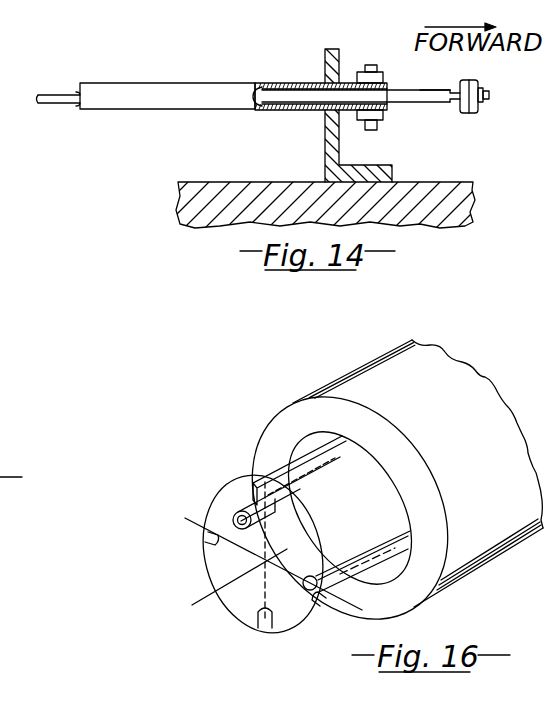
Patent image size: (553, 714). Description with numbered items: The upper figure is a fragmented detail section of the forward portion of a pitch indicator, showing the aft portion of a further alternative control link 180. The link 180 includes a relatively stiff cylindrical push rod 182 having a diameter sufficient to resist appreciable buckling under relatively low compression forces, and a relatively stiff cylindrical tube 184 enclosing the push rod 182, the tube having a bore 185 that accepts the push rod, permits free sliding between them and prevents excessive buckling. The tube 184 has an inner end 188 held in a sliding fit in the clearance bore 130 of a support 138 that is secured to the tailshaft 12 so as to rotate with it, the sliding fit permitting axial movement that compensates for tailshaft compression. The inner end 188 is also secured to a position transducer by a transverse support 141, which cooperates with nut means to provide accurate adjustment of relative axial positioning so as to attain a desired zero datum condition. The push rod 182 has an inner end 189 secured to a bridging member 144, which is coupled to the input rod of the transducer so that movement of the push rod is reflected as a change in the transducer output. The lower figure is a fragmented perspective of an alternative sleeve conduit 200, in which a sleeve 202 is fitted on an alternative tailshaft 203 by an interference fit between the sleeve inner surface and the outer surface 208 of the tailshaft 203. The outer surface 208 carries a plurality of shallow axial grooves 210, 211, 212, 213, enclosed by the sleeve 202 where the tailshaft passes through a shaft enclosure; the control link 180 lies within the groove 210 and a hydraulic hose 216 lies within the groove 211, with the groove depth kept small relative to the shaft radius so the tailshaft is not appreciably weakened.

In FIG. 14, the tailshaft 12 is at (185, 210).
In FIG. 14, the clearance bore 130 is at (323, 112).
In FIG. 14, the support 138 is at (323, 150).
In FIG. 14, the transverse support 141 is at (371, 130).
In FIG. 14, the bridging member 144 is at (479, 81).
In FIG. 14, the push rod 182 is at (60, 93).
In FIG. 14, the tube 184 is at (177, 98).
In FIG. 14, the bore 185 is at (280, 84).
In FIG. 14, the inner end of the tube 188 is at (345, 81).
In FIG. 14, the inner end of the push rod 189 is at (446, 104).
In FIG. 16, the sleeve conduit 200 is at (377, 492).
In FIG. 16, the sleeve 202 is at (433, 373).
In FIG. 16, the tailshaft 203 is at (231, 567).
In FIG. 16, the outer surface of the tailshaft 208 is at (392, 518).
In FIG. 16, the axial groove 210 is at (262, 456).
In FIG. 16, the control link 180 is at (258, 480).
In FIG. 16, the axial groove 211 is at (330, 605).
In FIG. 16, the axial groove 212 is at (262, 629).
In FIG. 16, the axial groove 213 is at (210, 531).
In FIG. 16, the hydraulic hose 216 is at (314, 575).